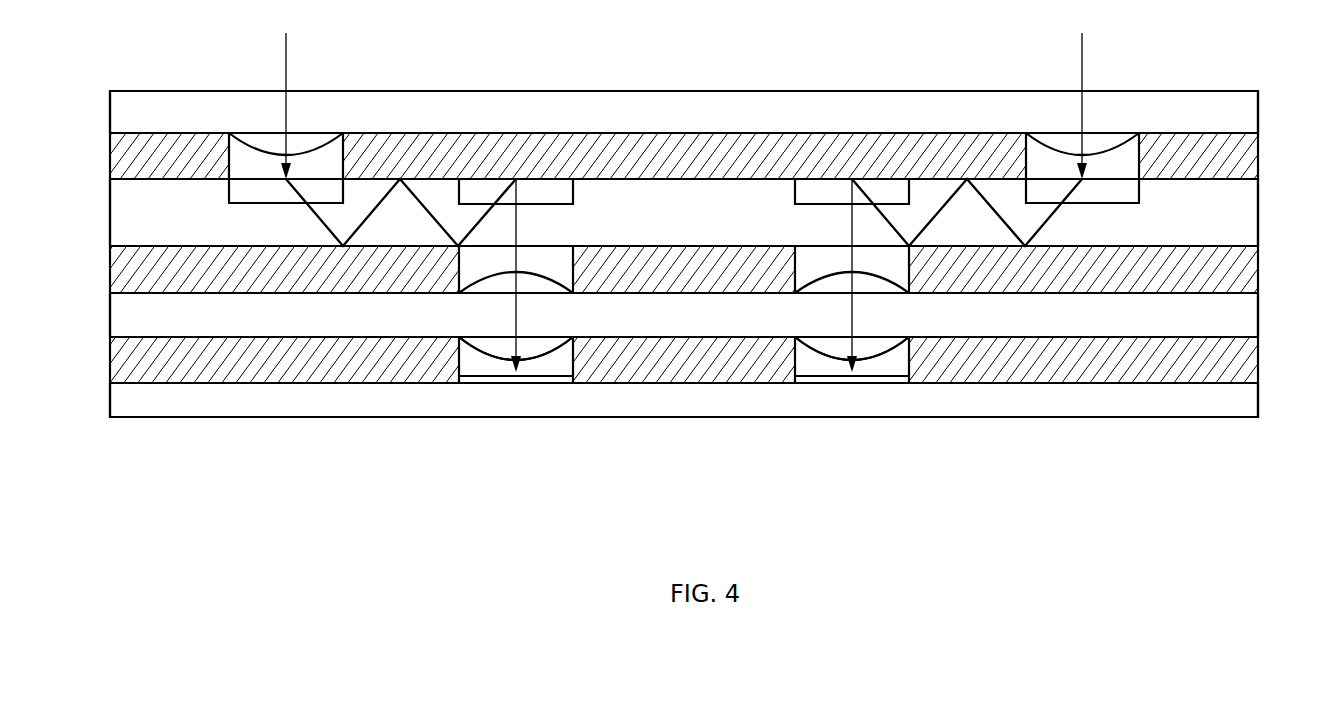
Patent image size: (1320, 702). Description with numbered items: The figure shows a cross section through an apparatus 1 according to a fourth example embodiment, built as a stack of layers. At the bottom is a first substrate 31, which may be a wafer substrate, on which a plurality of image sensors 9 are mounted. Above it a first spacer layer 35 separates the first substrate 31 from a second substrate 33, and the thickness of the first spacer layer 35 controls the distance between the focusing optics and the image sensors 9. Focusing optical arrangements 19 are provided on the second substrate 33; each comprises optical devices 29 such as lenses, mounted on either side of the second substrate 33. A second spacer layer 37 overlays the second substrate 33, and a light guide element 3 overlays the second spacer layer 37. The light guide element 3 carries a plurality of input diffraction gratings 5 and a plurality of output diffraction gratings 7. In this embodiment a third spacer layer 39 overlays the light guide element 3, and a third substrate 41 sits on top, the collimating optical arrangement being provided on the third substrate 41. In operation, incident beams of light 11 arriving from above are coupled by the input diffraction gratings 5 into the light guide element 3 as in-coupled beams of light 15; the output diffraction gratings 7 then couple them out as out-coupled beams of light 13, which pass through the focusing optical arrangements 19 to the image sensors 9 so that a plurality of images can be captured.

The apparatus 1 is at (172, 445).
The light guide element 3 is at (1258, 211).
The input diffraction gratings 5 is at (229, 203).
The output diffraction gratings 7 is at (575, 192).
The image sensors 9 is at (548, 388).
The incident beams of light 11 is at (286, 66).
The out-coupled beam of light 13 is at (518, 232).
The in-coupled beam of light 15 is at (375, 208).
The focusing optical arrangements 19 is at (483, 355).
The optical devices 29 is at (493, 348).
The first substrate 31 is at (1258, 403).
The second substrate 33 is at (1258, 315).
The first spacer layer 35 is at (1258, 358).
The second spacer layer 37 is at (1258, 265).
The third spacer layer 39 is at (1258, 155).
The third substrate 41 is at (1258, 113).